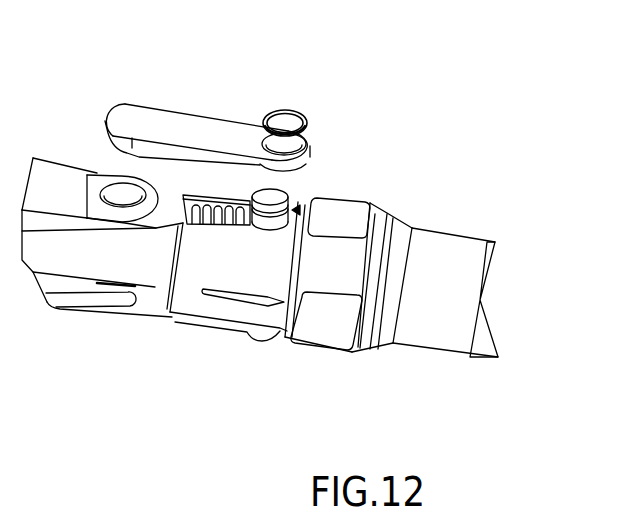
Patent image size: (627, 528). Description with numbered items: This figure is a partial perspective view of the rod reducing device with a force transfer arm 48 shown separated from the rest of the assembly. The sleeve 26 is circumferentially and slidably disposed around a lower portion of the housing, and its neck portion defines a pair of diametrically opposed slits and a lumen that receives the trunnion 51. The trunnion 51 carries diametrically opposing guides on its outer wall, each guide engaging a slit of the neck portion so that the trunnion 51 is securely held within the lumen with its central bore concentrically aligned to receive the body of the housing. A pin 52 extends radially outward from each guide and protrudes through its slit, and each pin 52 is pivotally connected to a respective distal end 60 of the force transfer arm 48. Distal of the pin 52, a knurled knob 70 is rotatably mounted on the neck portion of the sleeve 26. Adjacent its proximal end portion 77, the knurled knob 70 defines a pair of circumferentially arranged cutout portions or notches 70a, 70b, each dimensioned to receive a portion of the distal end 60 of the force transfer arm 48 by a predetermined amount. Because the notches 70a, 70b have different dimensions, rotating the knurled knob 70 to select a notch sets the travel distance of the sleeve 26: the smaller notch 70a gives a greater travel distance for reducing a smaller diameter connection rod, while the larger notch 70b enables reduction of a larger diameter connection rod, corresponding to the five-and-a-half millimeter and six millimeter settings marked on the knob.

The sleeve 26 is at (447, 290).
The force transfer arm 48 is at (190, 130).
The trunnion 51 is at (246, 228).
The pin 52 is at (267, 197).
The distal end 60 is at (310, 137).
The knurled knob 70 is at (368, 261).
The notch 70a is at (316, 194).
The notch 70b is at (286, 332).
The proximal end portion 77 is at (291, 267).